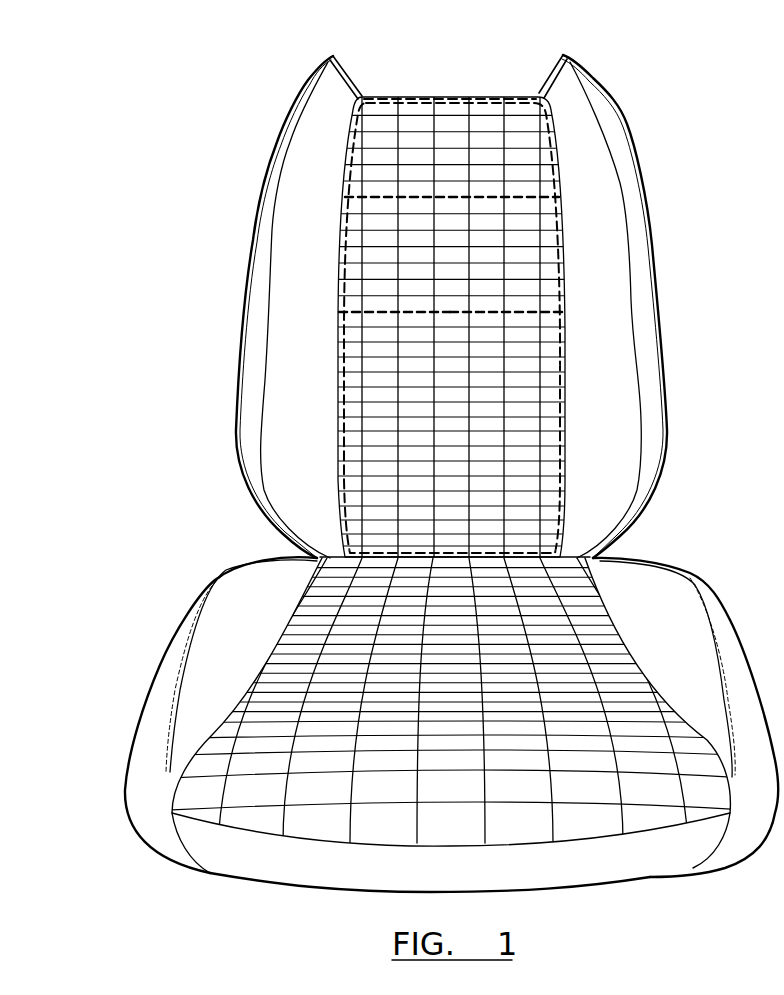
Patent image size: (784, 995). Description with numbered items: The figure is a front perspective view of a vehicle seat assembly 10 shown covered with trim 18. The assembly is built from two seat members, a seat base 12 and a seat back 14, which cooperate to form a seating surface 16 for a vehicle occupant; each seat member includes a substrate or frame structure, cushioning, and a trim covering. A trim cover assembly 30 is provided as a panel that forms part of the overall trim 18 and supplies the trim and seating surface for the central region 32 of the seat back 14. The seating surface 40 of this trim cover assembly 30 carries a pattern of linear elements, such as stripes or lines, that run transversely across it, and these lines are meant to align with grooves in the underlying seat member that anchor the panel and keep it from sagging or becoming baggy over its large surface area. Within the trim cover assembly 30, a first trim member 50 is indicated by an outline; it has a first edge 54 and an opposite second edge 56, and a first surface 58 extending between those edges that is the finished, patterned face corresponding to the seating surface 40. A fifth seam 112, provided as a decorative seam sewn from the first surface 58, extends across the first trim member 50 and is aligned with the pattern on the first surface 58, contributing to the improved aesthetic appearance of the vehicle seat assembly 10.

The vehicle seat assembly 10 is at (190, 105).
The seat base 12 is at (592, 162).
The seat back 14 is at (655, 604).
The seating surface 16 is at (622, 440).
The trim 18 is at (394, 372).
The trim cover assembly 30 is at (445, 96).
The central region 32 is at (464, 340).
The seating surface of the trim assembly 40 is at (464, 403).
The first trim member 50 is at (483, 125).
The first edge 54 is at (567, 302).
The second edge 56 is at (338, 300).
The first surface 58 is at (464, 277).
The fifth seam 112 is at (525, 194).